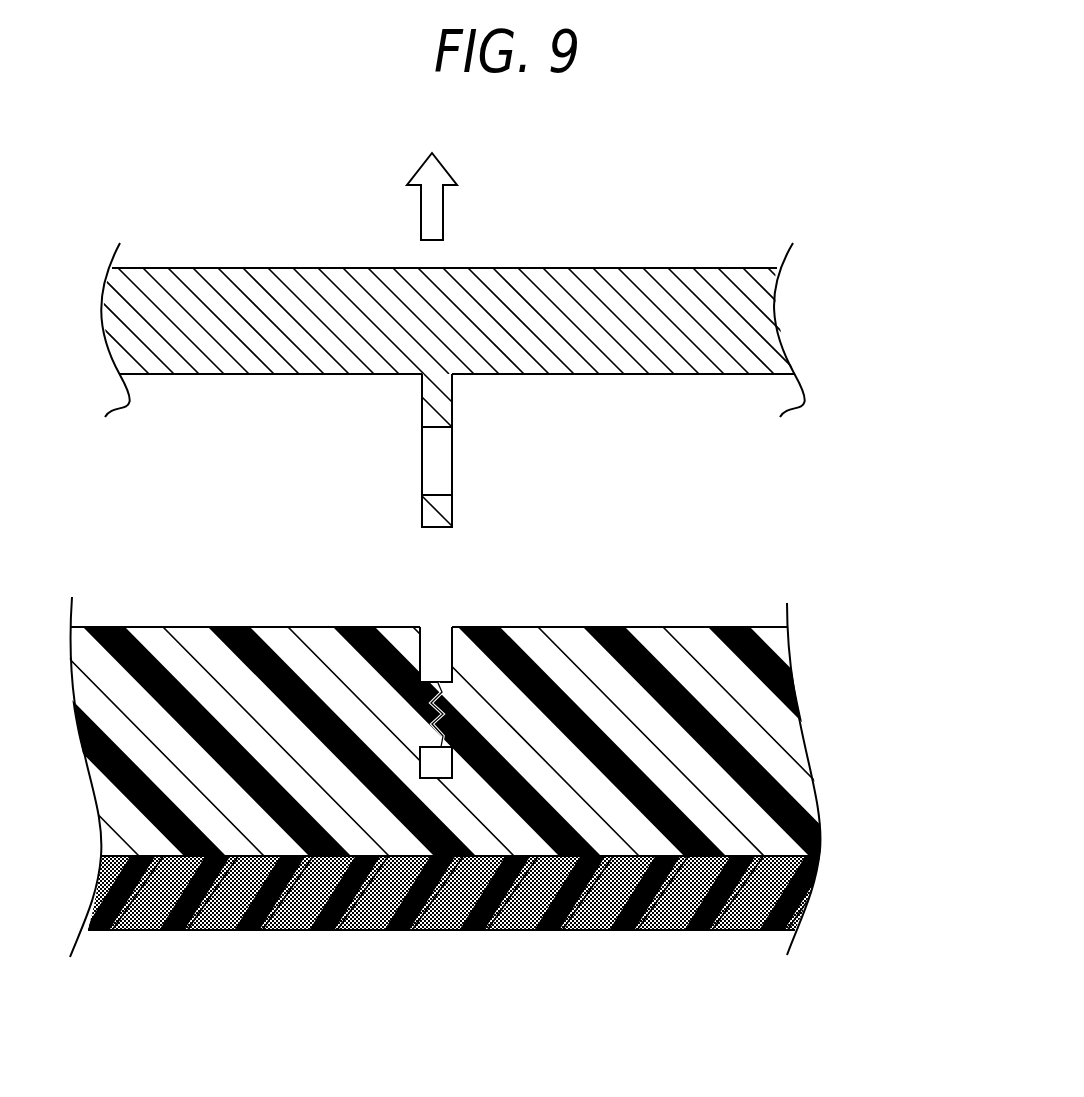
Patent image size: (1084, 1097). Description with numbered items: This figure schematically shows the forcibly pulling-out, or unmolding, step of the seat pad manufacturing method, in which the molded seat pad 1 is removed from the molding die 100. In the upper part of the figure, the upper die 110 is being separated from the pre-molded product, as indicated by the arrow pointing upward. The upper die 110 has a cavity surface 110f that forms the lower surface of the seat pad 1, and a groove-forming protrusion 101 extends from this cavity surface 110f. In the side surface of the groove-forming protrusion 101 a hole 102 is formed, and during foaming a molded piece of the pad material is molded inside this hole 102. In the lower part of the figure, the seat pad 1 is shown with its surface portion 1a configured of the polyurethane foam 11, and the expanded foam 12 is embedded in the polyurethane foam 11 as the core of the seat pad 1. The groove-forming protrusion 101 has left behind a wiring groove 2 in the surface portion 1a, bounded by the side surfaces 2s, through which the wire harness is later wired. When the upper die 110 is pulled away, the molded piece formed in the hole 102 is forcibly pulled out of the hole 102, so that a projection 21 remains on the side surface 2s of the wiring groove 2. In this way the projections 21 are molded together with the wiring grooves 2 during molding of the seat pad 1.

The seat pad 1 is at (542, 789).
The wiring groove 2 is at (465, 774).
The side surface of wiring groove 2s is at (422, 660).
The polyurethane foam 11 is at (542, 741).
The surface portion 1a is at (777, 758).
The expanded foam 12 is at (715, 913).
The projection 21 is at (415, 723).
The molding die 100 is at (471, 369).
The upper die 110 is at (471, 390).
The cavity surface 110f is at (183, 375).
The groove-forming protrusion 101 is at (417, 500).
The hole 102 is at (440, 462).